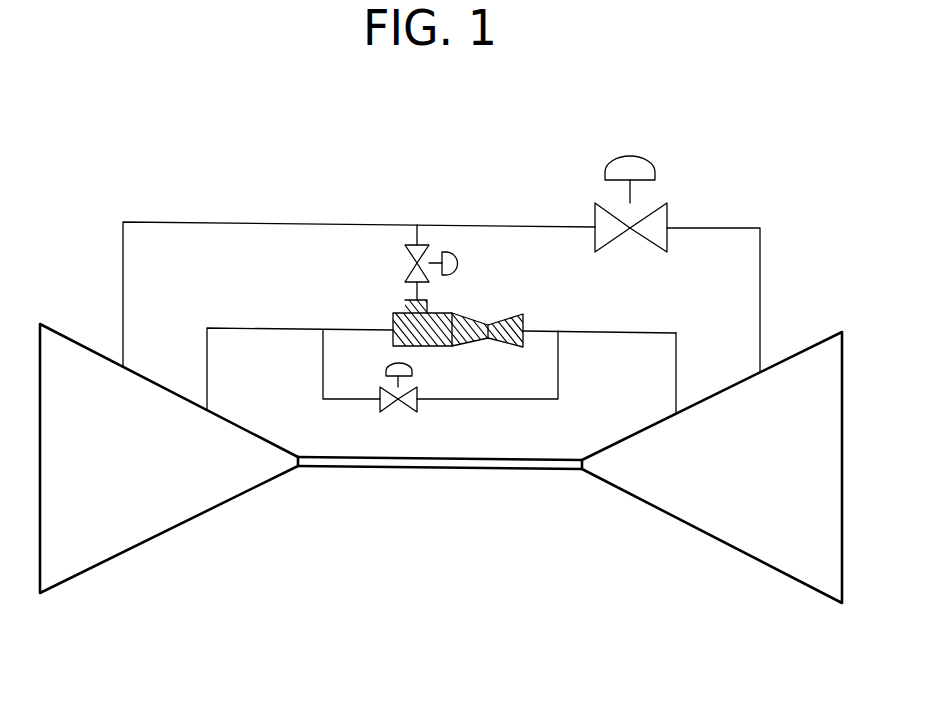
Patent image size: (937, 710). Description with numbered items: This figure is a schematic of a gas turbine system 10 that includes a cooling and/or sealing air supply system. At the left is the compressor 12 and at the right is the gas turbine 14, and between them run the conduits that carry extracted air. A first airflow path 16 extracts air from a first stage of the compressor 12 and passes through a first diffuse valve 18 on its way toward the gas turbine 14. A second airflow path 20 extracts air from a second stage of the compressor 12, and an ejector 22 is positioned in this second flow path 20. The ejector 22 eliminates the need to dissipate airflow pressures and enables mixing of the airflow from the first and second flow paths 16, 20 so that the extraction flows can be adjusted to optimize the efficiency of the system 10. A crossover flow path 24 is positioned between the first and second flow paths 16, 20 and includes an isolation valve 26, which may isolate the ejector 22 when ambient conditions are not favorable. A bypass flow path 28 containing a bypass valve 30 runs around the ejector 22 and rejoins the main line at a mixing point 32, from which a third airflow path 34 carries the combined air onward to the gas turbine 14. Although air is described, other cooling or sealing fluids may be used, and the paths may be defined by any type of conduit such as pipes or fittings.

The gas turbine system 10 is at (258, 130).
The compressor 12 is at (152, 461).
The gas turbine 14 is at (760, 468).
The first airflow path 16 is at (166, 222).
The first diffuse valve 18 is at (647, 152).
The second airflow path 20 is at (237, 328).
The ejector 22 is at (473, 313).
The crossover flow path 24 is at (410, 235).
The isolation valve 26 is at (457, 263).
The bypass flow path 28 is at (323, 363).
The bypass valve 30 is at (405, 410).
The mixing point 32 is at (557, 329).
The third airflow path 34 is at (676, 368).